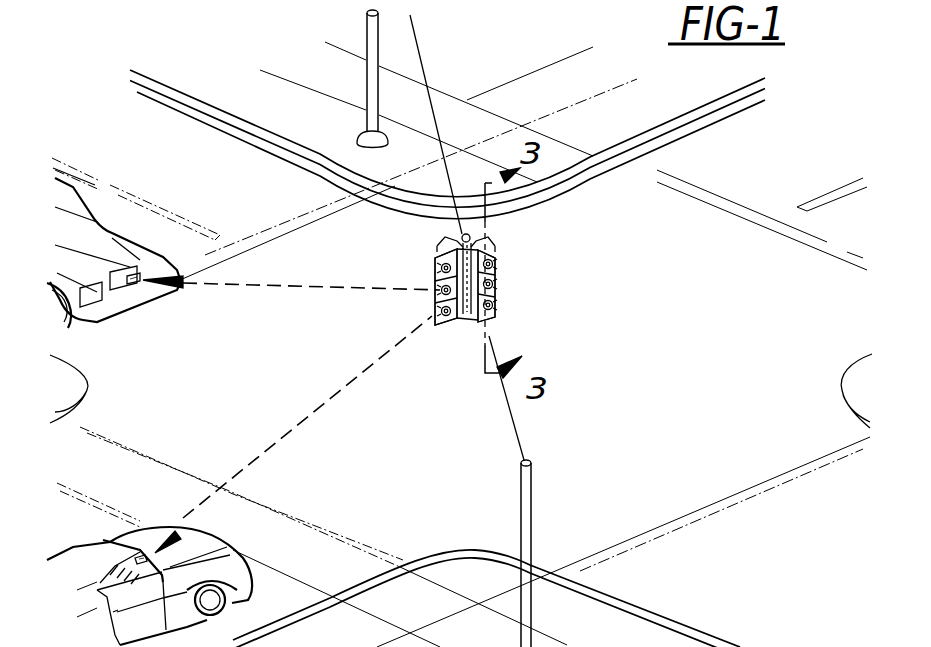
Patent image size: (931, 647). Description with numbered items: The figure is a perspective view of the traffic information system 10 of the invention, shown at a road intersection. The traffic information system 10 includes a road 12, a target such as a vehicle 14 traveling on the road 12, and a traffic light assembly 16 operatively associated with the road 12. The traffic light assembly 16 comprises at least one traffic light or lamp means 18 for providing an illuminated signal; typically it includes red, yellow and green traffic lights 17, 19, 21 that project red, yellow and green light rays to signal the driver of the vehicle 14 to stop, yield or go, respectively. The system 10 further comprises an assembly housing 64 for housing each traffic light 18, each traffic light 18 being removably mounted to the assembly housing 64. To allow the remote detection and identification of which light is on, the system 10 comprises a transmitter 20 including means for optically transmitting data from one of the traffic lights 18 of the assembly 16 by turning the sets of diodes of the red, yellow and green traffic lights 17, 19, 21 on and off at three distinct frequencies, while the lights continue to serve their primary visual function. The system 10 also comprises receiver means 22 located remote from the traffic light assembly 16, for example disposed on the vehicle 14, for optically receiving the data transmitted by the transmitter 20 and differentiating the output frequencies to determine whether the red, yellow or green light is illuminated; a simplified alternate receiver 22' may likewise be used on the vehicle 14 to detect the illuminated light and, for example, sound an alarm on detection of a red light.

The traffic information system 10 is at (590, 160).
The road 12 is at (678, 333).
The vehicle 14 is at (128, 242).
The traffic light assembly 16 is at (463, 232).
The red traffic light 17 is at (437, 268).
The traffic light 18 is at (459, 321).
The yellow traffic light 19 is at (436, 290).
The transmitter 20 is at (437, 275).
The green traffic light 21 is at (447, 320).
The receiver means 22 is at (169, 418).
The alternate receiver 22' is at (190, 418).
The assembly housing 64 is at (497, 246).